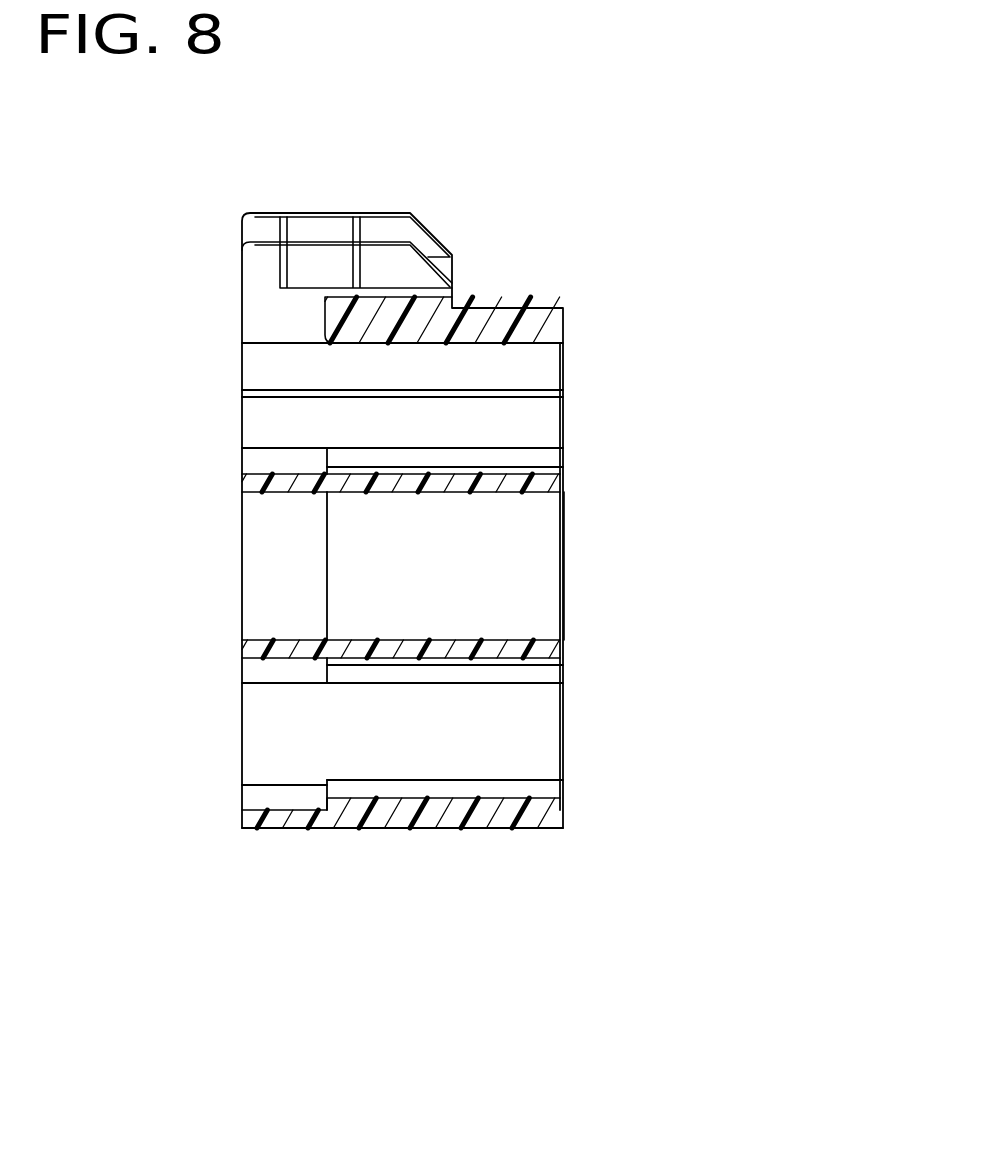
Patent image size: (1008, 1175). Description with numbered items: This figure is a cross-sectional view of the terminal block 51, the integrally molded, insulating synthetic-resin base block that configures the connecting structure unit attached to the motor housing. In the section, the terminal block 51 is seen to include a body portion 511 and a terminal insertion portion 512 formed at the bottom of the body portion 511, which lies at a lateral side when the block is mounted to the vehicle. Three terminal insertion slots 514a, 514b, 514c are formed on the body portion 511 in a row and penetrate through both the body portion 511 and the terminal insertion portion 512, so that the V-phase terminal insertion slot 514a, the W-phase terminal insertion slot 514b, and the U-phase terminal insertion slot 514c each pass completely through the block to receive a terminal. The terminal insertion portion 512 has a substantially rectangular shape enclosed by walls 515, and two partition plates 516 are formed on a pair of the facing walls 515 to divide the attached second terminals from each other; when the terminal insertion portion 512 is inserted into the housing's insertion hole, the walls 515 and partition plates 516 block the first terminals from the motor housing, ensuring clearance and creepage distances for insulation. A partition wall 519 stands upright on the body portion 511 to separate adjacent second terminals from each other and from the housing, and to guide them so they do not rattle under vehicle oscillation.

The terminal block 51 is at (725, 215).
The body portion 511 is at (260, 227).
The terminal insertion portion 512 is at (345, 263).
The V-phase terminal insertion slot 514a is at (393, 342).
The W-phase terminal insertion slot 514b is at (393, 490).
The U-phase terminal insertion slot 514c is at (393, 798).
The wall 515 is at (548, 828).
The partition plate 516 is at (562, 497).
The partition wall 519 is at (253, 650).